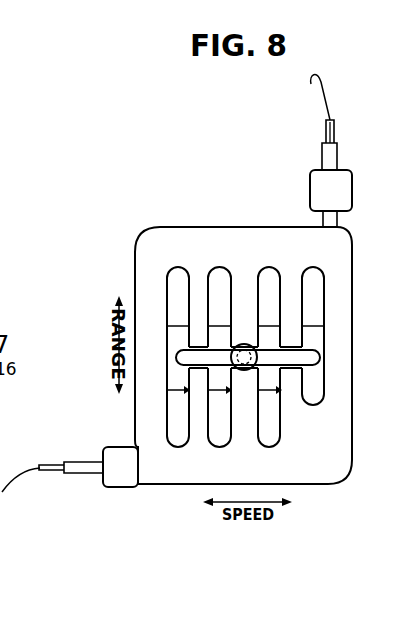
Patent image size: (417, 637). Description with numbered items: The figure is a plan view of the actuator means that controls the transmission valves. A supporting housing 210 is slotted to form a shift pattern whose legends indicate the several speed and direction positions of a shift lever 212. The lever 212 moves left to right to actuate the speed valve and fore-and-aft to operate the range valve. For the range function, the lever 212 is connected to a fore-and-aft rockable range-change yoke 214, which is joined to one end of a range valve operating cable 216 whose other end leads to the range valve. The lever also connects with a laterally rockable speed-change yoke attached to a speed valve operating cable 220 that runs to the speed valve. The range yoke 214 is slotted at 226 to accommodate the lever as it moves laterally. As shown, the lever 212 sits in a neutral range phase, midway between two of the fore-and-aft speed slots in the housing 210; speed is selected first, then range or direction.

The supporting housing 210 is at (352, 314).
The shift lever 212 is at (244, 344).
The range-change yoke 214 is at (178, 333).
The range valve operating cable 216 is at (334, 130).
The speed valve operating cable 220 is at (57, 466).
The slot in range yoke 226 is at (318, 361).